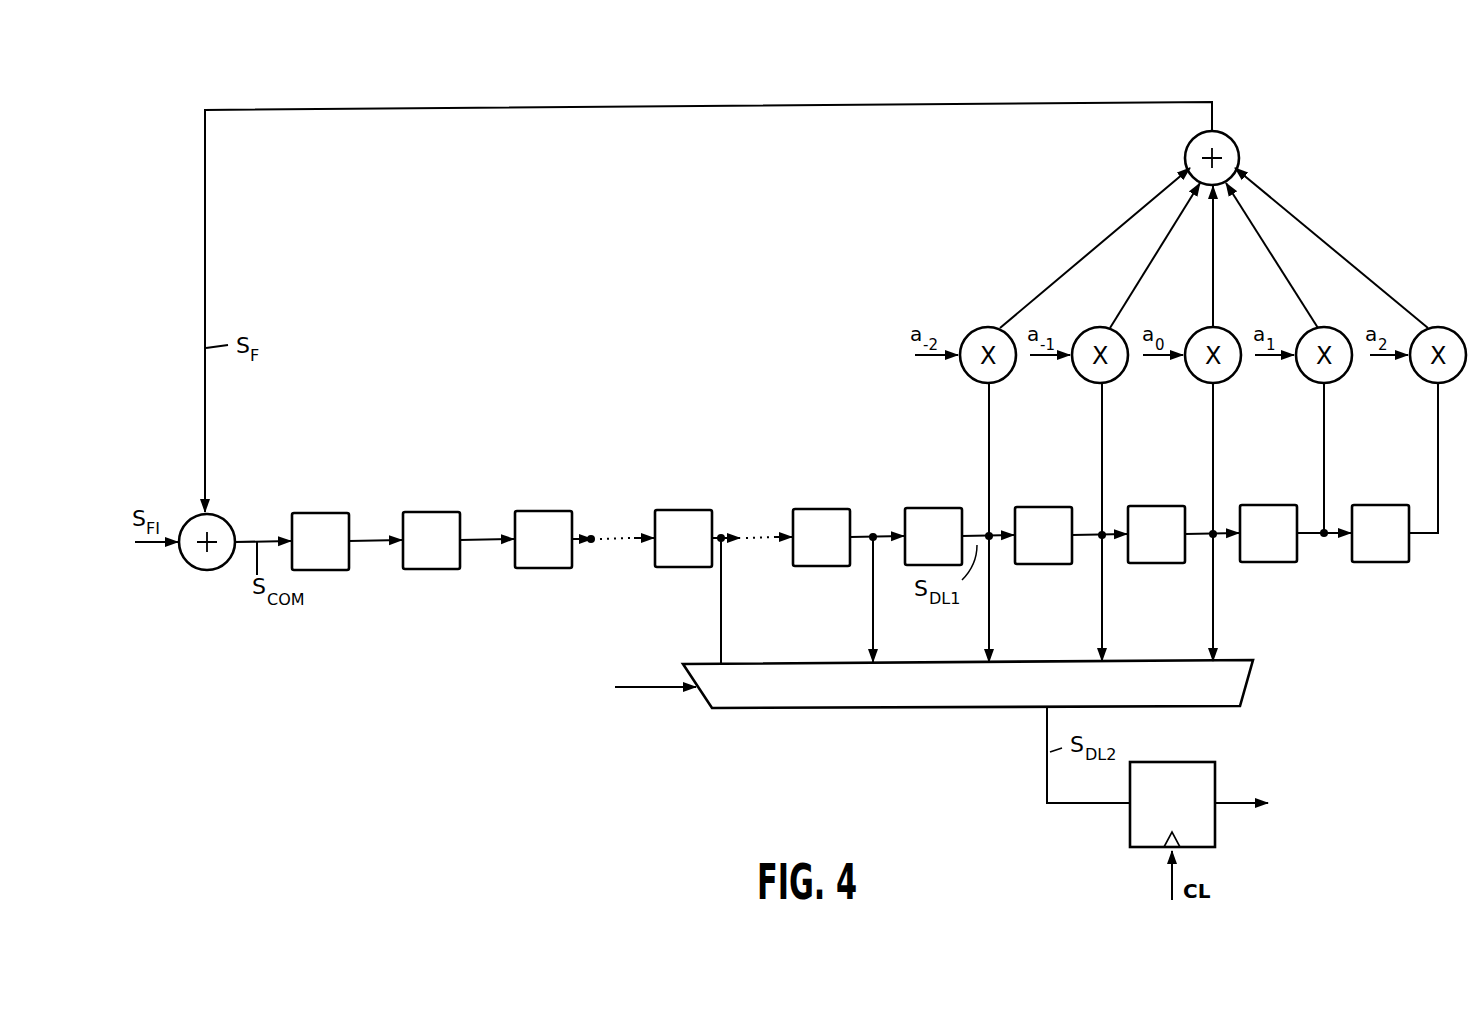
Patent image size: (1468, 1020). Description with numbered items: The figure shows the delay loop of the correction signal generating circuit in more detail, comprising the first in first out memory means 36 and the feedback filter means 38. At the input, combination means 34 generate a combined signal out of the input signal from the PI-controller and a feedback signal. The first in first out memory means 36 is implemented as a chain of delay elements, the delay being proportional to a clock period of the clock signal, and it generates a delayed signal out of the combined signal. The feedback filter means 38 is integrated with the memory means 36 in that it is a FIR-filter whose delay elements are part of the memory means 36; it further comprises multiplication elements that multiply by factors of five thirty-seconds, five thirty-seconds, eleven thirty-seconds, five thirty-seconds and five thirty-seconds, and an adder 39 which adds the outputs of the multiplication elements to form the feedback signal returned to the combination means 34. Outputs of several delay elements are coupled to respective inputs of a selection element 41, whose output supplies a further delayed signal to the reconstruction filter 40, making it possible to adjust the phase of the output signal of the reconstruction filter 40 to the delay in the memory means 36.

The combination means 34 is at (209, 572).
The first in first out memory means 36 is at (850, 504).
The feedback filter means 38 is at (1213, 607).
The adder 39 is at (1226, 140).
The reconstruction filter 40 is at (1208, 777).
The selection element 41 is at (1240, 682).